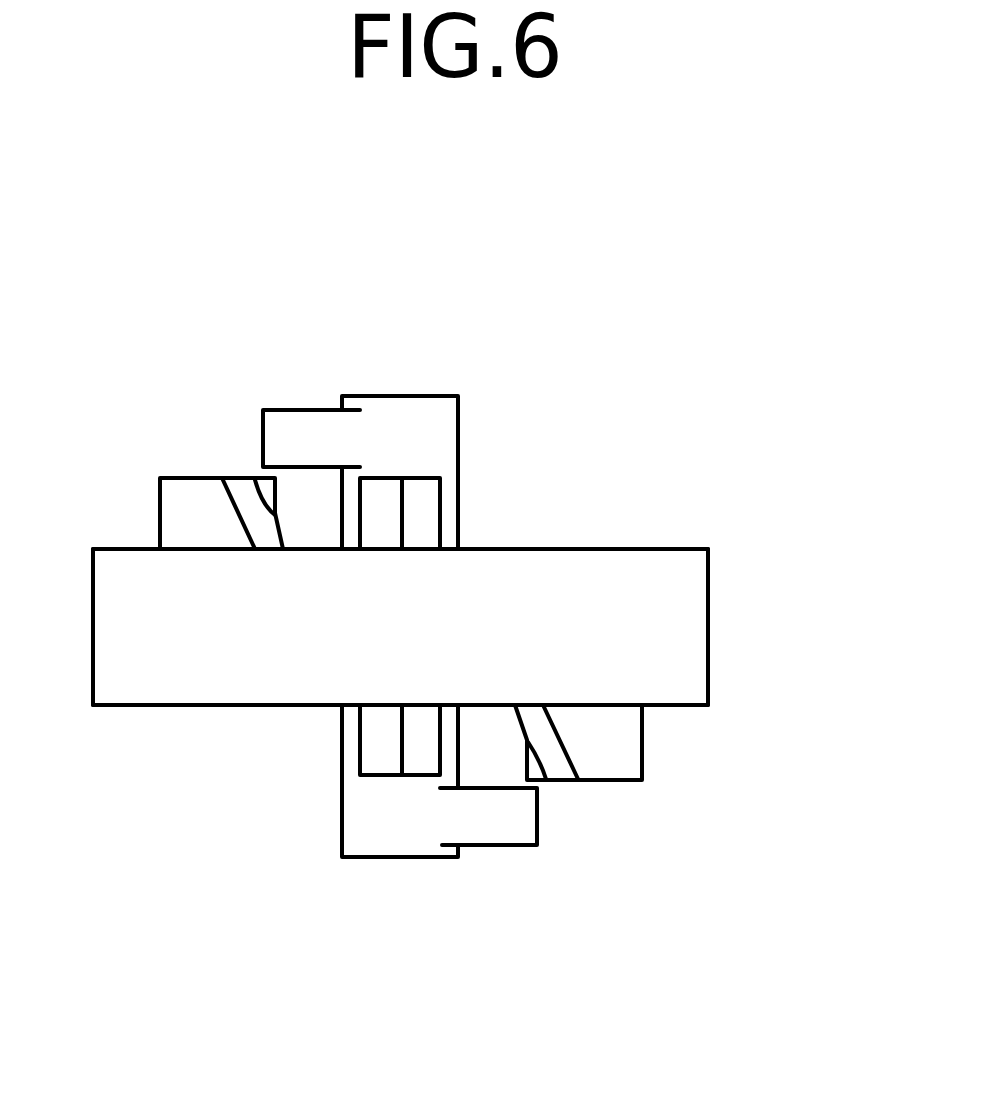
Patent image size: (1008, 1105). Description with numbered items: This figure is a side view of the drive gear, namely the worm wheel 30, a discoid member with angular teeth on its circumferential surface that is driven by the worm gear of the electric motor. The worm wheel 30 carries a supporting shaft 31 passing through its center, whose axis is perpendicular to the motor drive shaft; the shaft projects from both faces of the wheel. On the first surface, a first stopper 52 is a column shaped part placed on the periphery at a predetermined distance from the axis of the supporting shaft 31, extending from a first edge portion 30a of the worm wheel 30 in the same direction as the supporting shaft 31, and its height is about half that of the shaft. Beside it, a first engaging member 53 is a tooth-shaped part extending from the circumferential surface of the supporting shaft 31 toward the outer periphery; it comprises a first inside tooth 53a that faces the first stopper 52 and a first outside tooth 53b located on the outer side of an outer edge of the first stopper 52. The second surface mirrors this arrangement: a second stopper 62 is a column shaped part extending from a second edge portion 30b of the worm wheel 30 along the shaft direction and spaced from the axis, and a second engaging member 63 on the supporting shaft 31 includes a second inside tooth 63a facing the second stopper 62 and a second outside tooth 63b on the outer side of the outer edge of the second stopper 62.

The worm wheel 30 is at (763, 620).
The first edge portion 30a is at (640, 532).
The second edge portion 30b is at (148, 730).
The supporting shaft 31 is at (452, 419).
The first stopper 52 is at (177, 527).
The first engaging member 53 is at (460, 268).
The first inside tooth 53a is at (421, 502).
The first outside tooth 53b is at (300, 432).
The second stopper 62 is at (617, 758).
The second engaging member 63 is at (647, 882).
The second inside tooth 63a is at (425, 752).
The second outside tooth 63b is at (503, 813).